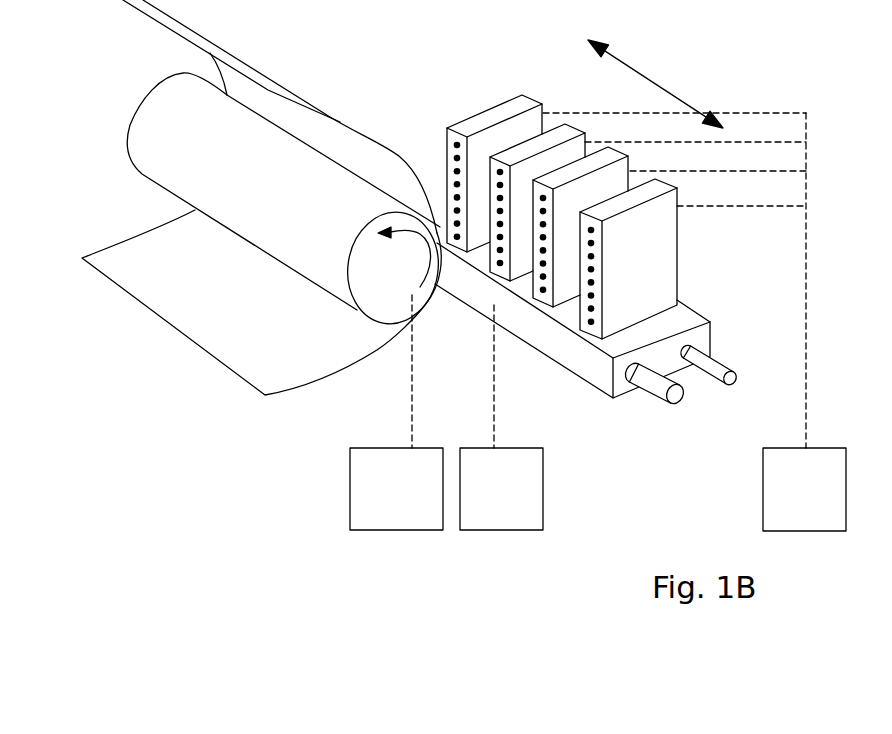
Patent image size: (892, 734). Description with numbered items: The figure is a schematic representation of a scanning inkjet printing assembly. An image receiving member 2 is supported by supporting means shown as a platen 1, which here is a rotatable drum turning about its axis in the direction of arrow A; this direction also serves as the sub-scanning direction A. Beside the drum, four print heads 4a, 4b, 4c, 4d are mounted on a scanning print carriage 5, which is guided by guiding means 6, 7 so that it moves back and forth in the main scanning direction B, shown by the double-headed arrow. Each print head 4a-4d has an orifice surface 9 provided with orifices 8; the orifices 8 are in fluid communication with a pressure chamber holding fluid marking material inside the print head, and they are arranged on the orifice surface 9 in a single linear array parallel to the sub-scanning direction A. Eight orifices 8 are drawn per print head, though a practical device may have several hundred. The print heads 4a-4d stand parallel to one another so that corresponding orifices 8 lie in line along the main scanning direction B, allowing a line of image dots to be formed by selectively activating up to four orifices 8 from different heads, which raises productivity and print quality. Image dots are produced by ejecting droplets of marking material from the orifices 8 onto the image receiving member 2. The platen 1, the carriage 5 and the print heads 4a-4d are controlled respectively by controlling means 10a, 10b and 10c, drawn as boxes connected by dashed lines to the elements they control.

The platen 1 is at (157, 110).
The image receiving member 2 is at (318, 367).
The print head 4a is at (468, 152).
The print head 4b is at (560, 135).
The print head 4c is at (605, 163).
The print head 4d is at (667, 283).
The scanning print carriage 5 is at (566, 357).
The guiding means 6 is at (662, 390).
The guiding means 7 is at (717, 368).
The orifice 8 is at (450, 157).
The orifice surface 9 is at (450, 138).
The controlling means 10a is at (362, 502).
The controlling means 10b is at (530, 495).
The controlling means 10c is at (773, 500).
The sub-scanning direction A is at (404, 257).
The main scanning direction B is at (665, 87).